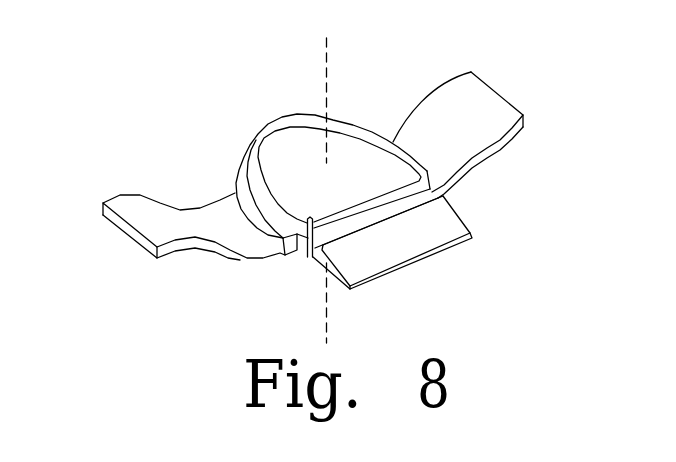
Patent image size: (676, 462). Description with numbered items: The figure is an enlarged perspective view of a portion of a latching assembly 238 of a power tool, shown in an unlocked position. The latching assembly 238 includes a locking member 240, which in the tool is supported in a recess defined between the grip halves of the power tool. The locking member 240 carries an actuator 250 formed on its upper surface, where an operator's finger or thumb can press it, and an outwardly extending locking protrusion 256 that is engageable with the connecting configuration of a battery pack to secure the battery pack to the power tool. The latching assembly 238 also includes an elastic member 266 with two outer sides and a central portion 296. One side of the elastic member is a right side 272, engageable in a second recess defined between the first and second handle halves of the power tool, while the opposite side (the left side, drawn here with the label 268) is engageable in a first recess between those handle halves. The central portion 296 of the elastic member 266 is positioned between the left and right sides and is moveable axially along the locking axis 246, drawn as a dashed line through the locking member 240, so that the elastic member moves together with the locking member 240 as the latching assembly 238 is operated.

The latching assembly 238 is at (140, 110).
The locking member 240 is at (260, 133).
The locking axis 246 is at (326, 83).
The actuator 250 is at (348, 128).
The locking protrusion 256 is at (455, 207).
The elastic member 266 is at (498, 142).
The first arm 268 is at (120, 232).
The right side 272 is at (503, 93).
The central portion 296 is at (405, 140).